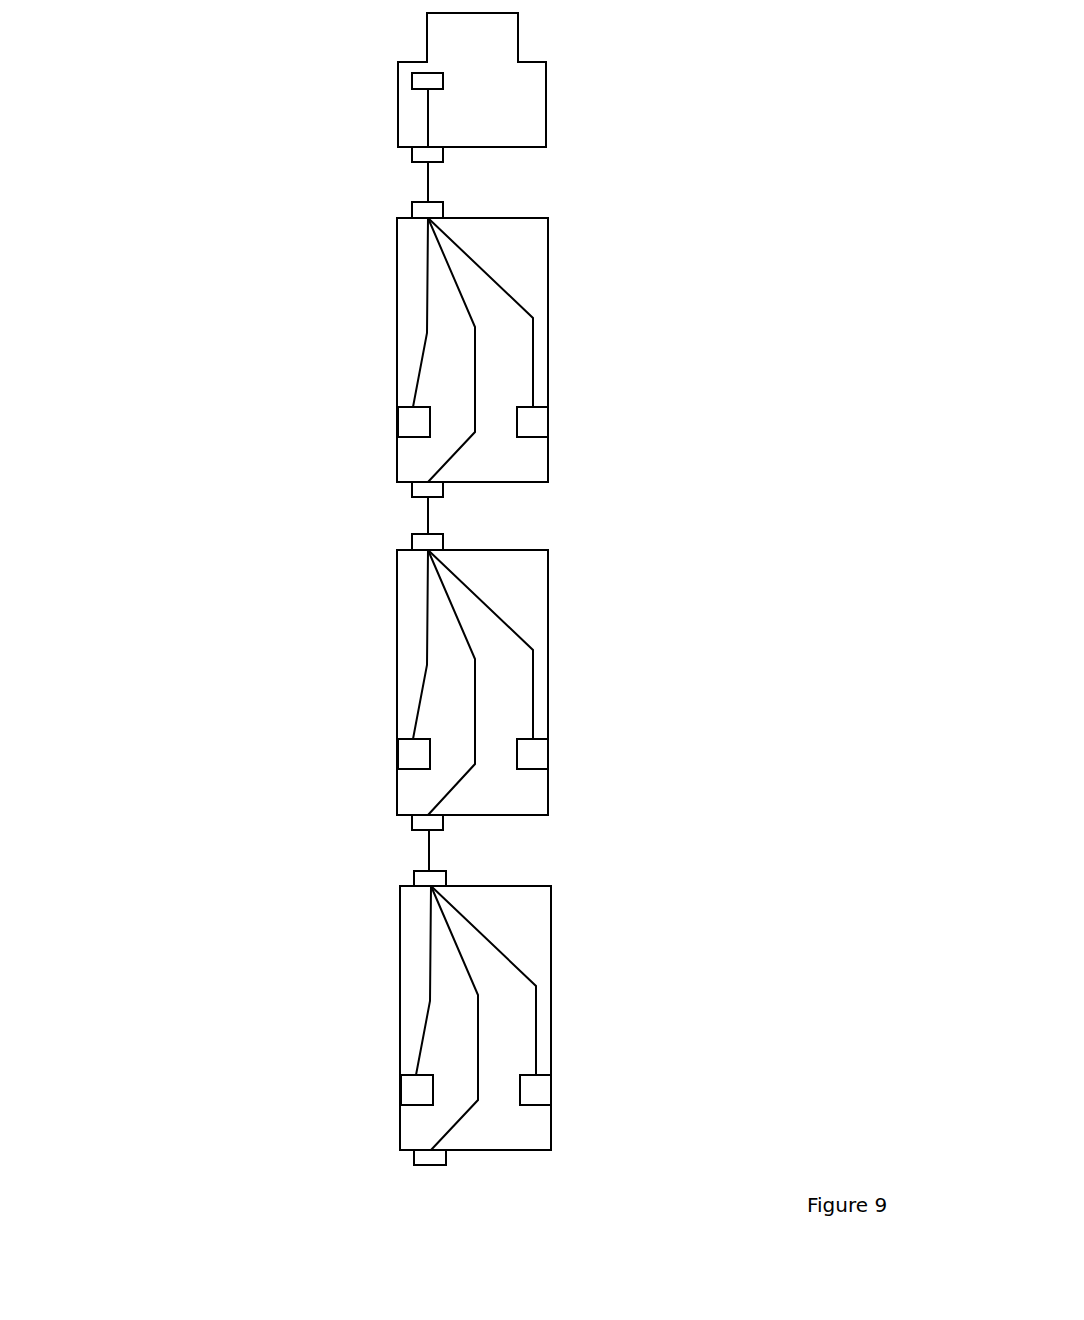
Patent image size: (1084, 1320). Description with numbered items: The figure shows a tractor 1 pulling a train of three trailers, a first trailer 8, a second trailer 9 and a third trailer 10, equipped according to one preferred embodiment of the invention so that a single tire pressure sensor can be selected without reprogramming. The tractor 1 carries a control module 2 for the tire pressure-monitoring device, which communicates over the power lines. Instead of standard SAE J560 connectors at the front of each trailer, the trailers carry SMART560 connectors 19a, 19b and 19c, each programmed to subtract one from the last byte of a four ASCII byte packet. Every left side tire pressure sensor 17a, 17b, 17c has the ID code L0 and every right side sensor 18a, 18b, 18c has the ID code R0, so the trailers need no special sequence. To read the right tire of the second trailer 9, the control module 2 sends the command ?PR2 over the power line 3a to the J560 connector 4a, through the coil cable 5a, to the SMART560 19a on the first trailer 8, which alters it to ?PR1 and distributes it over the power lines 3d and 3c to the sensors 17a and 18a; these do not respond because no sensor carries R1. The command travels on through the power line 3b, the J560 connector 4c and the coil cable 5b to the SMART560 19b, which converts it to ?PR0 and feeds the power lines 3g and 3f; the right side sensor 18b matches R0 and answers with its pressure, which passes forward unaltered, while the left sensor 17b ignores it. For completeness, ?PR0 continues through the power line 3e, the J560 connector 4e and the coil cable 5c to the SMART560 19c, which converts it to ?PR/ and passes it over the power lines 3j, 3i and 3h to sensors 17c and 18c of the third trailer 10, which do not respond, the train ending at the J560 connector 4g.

The tractor 1 is at (497, 43).
The control module 2 is at (412, 80).
The power line 3a is at (428, 116).
The J560 connector 4a is at (412, 155).
The coil cable 5a is at (428, 180).
The SMART560 connector 19a is at (412, 211).
The first trailer 8 is at (510, 248).
The power line 3d is at (427, 327).
The left side tire pressure sensor 17a is at (398, 412).
The power line 3b is at (442, 460).
The power line 3c is at (535, 343).
The right side tire pressure sensor 18a is at (548, 420).
The J560 connector 4c is at (412, 490).
The coil cable 5b is at (430, 515).
The SMART560 connector 19b is at (412, 540).
The second trailer 9 is at (510, 580).
The power line 3g is at (427, 658).
The left side tire pressure sensor 17b is at (398, 744).
The power line 3e is at (442, 792).
The power line 3f is at (535, 677).
The right side tire pressure sensor 18b is at (548, 752).
The J560 connector 4e is at (412, 825).
The coil cable 5c is at (430, 855).
The SMART560 connector 19c is at (414, 875).
The third trailer 10 is at (513, 913).
The power line 3j is at (430, 994).
The left side tire pressure sensor 17c is at (401, 1080).
The power line 3h is at (445, 1128).
The power line 3i is at (538, 1013).
The right side tire pressure sensor 18c is at (551, 1086).
The J560 connector 4g is at (414, 1160).